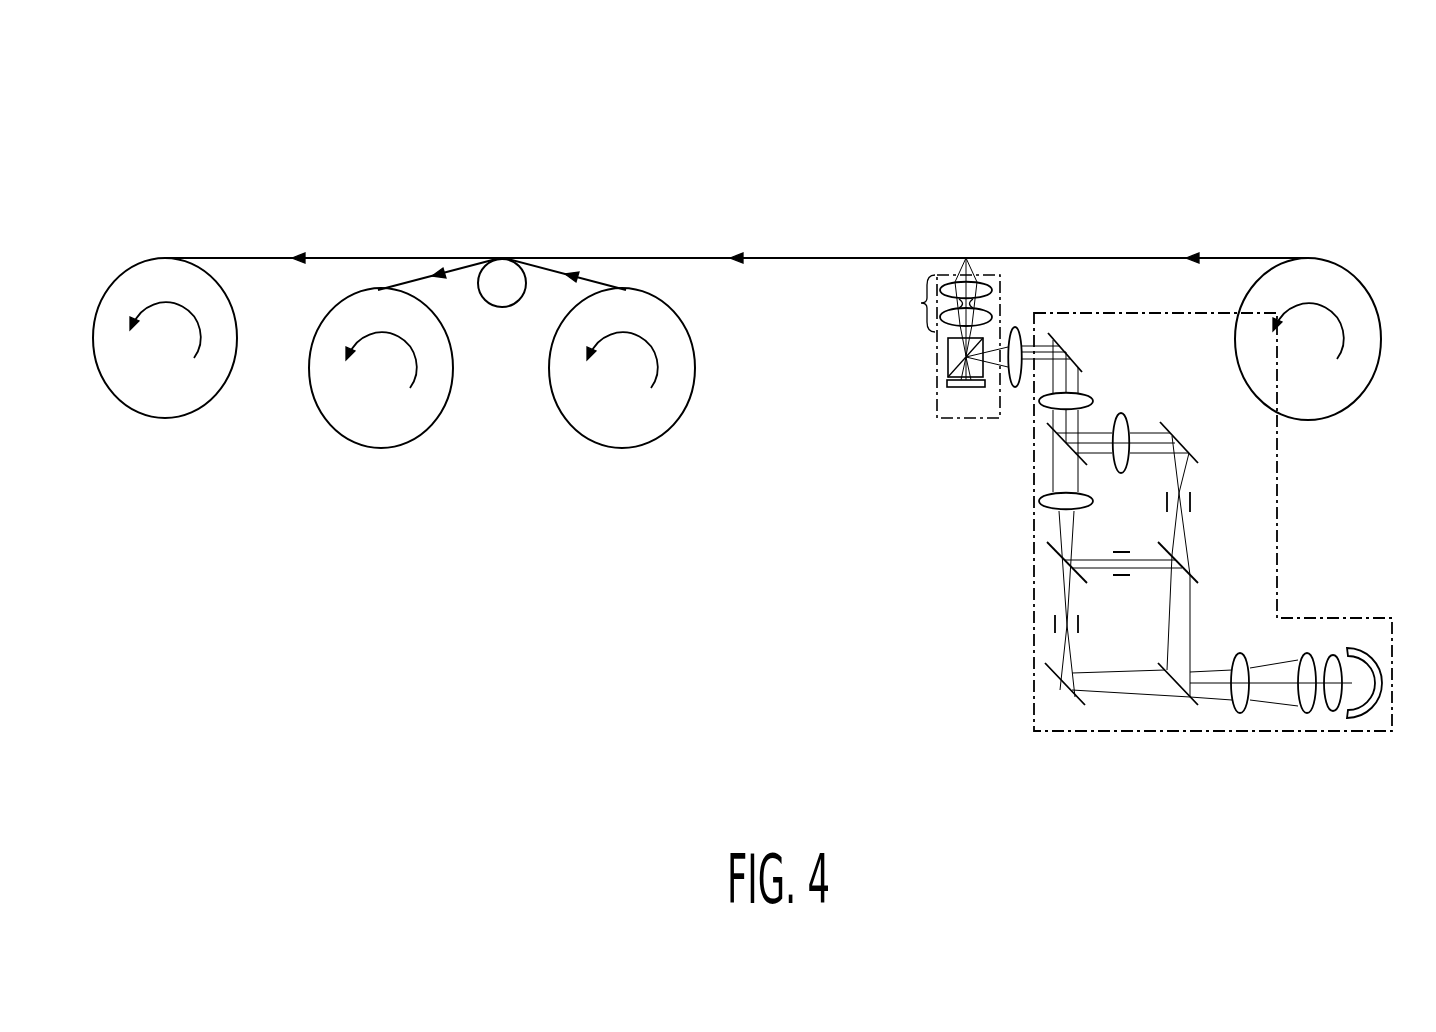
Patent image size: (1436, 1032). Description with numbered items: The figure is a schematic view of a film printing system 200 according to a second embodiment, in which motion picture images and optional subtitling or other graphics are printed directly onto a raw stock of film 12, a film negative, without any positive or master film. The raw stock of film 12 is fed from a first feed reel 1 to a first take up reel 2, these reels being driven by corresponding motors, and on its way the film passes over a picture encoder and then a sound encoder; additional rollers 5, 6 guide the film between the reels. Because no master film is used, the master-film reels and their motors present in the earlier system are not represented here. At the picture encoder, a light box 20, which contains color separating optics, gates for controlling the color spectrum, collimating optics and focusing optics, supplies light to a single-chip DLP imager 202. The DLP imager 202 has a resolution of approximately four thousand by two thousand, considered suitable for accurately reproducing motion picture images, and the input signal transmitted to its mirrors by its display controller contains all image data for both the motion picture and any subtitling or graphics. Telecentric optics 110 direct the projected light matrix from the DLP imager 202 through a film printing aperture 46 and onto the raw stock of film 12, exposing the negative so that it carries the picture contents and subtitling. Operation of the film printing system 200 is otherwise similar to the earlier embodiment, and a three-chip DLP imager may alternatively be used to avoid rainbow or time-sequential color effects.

The first feed reel 1 is at (1362, 290).
The first take up reel 2 is at (127, 407).
The roller M5 5 is at (608, 450).
The roller M6 6 is at (410, 443).
The raw stock of film 12 is at (1238, 258).
The light box 20 is at (1034, 612).
The film printing aperture 46 is at (970, 257).
The telecentric optics 110 is at (921, 303).
The film printing system 200 is at (1338, 134).
The single-chip DLP imager 202 is at (968, 388).